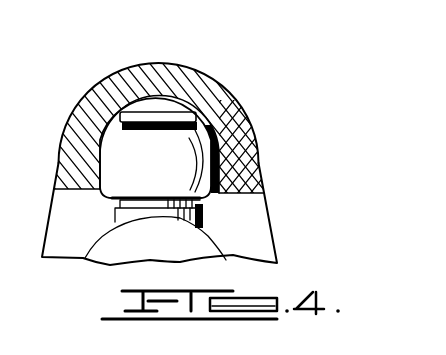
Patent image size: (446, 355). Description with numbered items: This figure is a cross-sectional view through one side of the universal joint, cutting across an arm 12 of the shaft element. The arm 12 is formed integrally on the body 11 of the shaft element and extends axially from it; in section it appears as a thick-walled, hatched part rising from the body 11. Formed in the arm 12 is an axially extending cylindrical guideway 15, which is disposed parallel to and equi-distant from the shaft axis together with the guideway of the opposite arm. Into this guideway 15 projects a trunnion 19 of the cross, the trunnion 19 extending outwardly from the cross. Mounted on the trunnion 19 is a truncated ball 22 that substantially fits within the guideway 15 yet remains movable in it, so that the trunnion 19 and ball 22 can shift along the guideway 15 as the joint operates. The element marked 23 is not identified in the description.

The body 11 is at (277, 246).
The arm 12 is at (174, 64).
The cylindrical guideway 15 is at (214, 137).
The trunnion 19 is at (198, 223).
The truncated ball 22 is at (216, 165).
The cap 23 is at (187, 108).